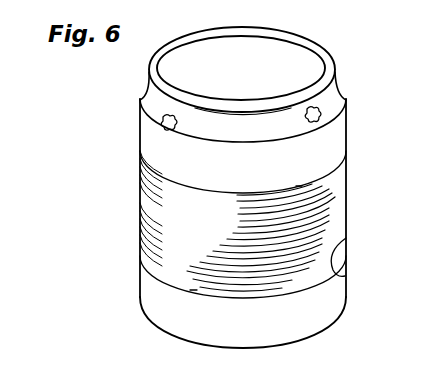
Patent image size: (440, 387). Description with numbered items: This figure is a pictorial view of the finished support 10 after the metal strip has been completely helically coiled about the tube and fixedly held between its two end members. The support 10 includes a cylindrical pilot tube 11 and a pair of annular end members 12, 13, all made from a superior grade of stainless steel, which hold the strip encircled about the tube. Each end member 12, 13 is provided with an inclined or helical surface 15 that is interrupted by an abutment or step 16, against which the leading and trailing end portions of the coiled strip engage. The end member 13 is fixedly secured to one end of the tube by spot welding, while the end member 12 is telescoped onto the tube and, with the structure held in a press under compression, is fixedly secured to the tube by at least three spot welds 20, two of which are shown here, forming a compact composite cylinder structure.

The support 10 is at (105, 93).
The cylindrical pilot tube 11 is at (203, 123).
The end member 12 is at (172, 162).
The end member 13 is at (153, 282).
The helical surface 15 is at (207, 192).
The abutment 16 is at (302, 186).
The spot welds 20 is at (165, 117).